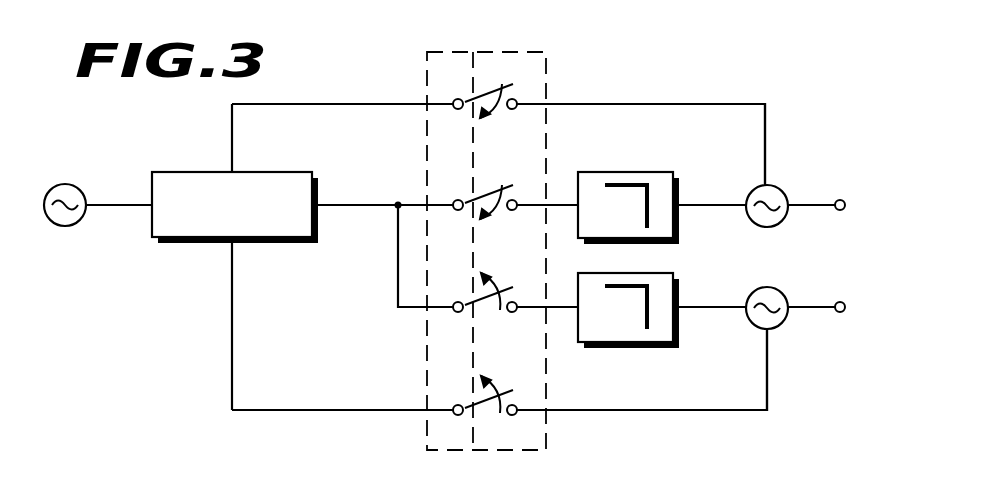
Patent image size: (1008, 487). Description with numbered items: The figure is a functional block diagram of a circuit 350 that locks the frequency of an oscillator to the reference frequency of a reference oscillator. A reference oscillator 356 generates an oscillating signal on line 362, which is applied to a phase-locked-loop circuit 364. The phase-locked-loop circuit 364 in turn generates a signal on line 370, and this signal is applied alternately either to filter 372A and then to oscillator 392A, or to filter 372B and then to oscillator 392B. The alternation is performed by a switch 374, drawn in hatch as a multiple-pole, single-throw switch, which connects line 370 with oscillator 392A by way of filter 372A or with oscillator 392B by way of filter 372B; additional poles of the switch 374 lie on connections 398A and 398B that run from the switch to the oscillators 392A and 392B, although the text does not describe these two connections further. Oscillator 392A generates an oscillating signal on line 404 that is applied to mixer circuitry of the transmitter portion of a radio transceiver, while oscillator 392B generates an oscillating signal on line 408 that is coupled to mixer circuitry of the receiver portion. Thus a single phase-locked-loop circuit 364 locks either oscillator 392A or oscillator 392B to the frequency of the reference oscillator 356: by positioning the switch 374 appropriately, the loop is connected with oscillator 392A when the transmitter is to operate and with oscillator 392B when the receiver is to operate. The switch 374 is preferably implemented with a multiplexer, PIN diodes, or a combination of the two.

The circuit 350 is at (821, 73).
The reference oscillator 356 is at (68, 182).
The line 362 is at (120, 208).
The phase-locked-loop circuit 364 is at (279, 172).
The line 370 is at (364, 208).
The switch 374 is at (546, 73).
The filter 372A is at (660, 172).
The filter 372B is at (628, 349).
The oscillator 392A is at (783, 223).
The oscillator 392B is at (783, 325).
The first bypass line 398A is at (768, 130).
The second bypass line 398B is at (672, 414).
The line 404 is at (844, 201).
The line 408 is at (843, 303).